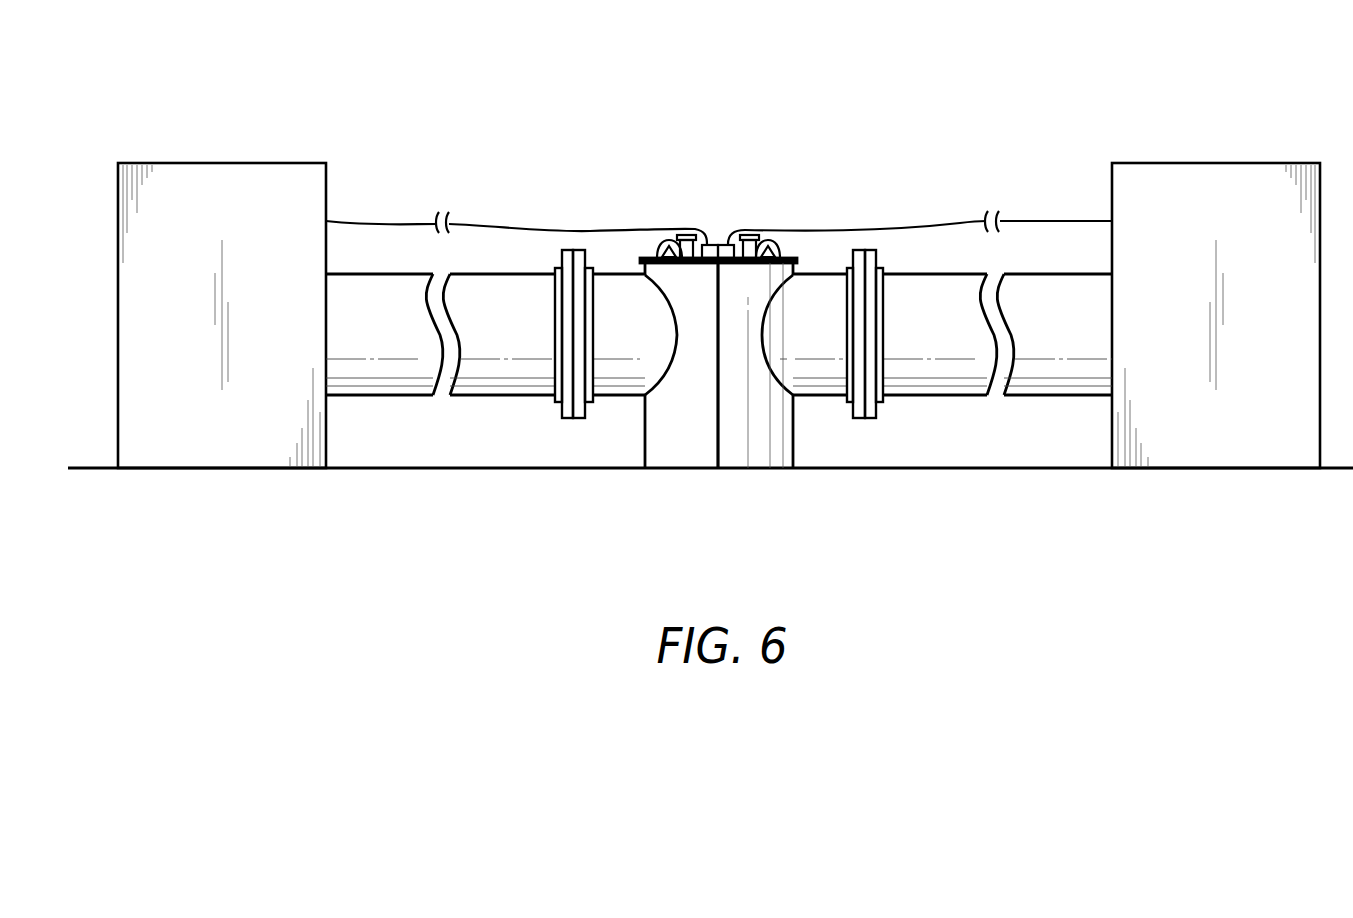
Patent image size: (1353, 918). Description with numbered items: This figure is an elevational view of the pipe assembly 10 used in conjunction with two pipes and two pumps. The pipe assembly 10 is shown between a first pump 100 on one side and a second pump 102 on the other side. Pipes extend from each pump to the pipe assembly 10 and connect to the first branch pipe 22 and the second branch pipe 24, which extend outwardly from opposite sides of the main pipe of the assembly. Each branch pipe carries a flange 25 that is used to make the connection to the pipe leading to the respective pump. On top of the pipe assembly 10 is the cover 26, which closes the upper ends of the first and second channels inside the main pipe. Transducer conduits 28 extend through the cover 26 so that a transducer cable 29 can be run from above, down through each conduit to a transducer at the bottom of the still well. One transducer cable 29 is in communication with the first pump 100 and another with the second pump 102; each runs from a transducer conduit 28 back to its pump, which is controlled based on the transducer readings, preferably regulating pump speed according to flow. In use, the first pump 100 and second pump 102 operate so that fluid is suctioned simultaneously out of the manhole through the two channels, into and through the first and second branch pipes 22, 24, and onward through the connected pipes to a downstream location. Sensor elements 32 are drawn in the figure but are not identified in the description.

The pipe assembly 10 is at (955, 121).
The first pump 100 is at (203, 217).
The second pump 102 is at (1198, 217).
The first branch pipe 22 is at (620, 274).
The second branch pipe 24 is at (817, 274).
The flange 25 is at (582, 252).
The cover 26 is at (793, 256).
The transducer conduit 28 is at (710, 243).
The transducer cable 29 is at (485, 223).
The sensors 32 is at (687, 232).